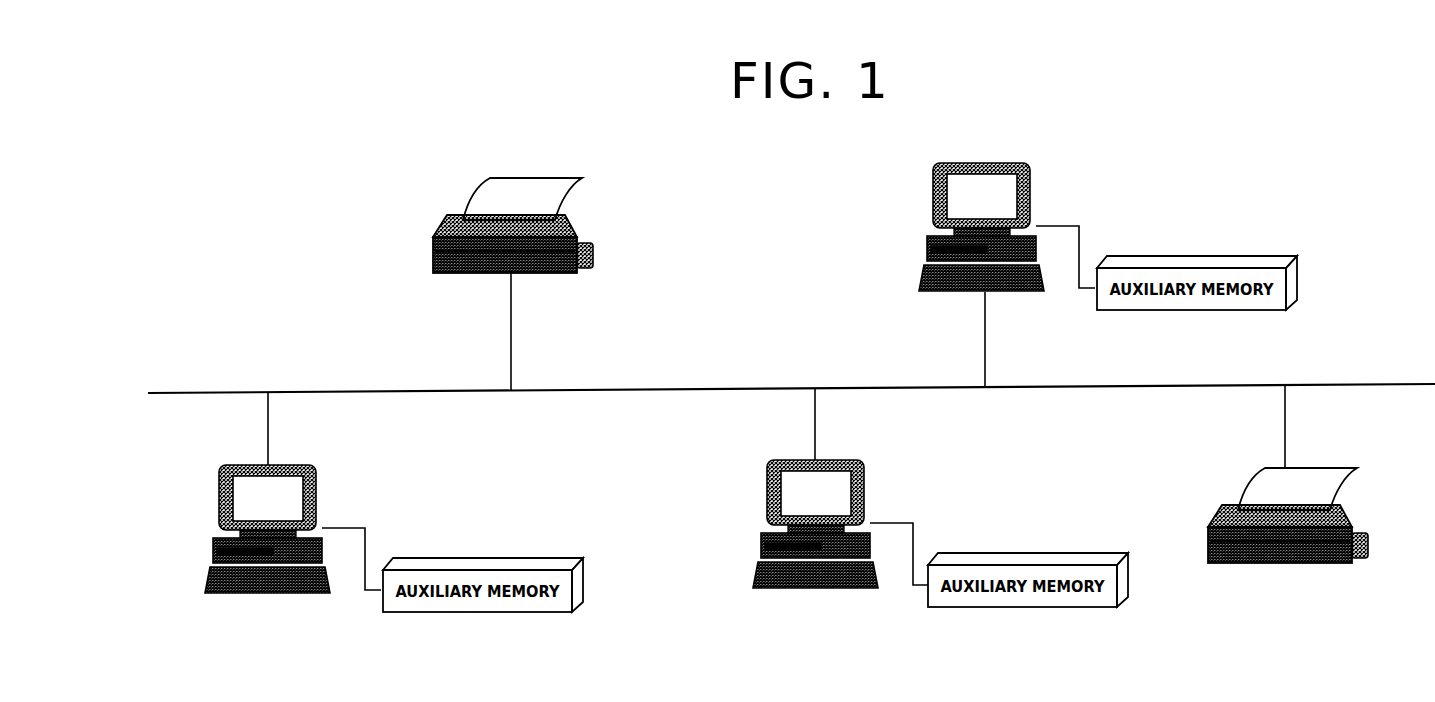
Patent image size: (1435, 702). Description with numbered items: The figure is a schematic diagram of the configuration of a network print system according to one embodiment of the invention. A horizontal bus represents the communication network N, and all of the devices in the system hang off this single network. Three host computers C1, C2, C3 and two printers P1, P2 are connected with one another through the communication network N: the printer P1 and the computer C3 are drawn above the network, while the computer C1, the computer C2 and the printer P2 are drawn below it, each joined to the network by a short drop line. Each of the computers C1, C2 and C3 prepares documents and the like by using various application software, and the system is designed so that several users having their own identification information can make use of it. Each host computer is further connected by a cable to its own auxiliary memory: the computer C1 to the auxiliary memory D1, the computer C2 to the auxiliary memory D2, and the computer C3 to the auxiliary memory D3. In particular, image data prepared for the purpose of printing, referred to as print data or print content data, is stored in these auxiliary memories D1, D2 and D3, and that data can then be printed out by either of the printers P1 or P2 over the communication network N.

The communication network N is at (1325, 384).
The printer P1 is at (505, 177).
The printer P2 is at (1310, 467).
The computer C1 is at (304, 465).
The computer C2 is at (850, 460).
The computer C3 is at (952, 163).
The auxiliary memory D1 is at (450, 558).
The auxiliary memory D2 is at (997, 553).
The auxiliary memory D3 is at (1163, 256).